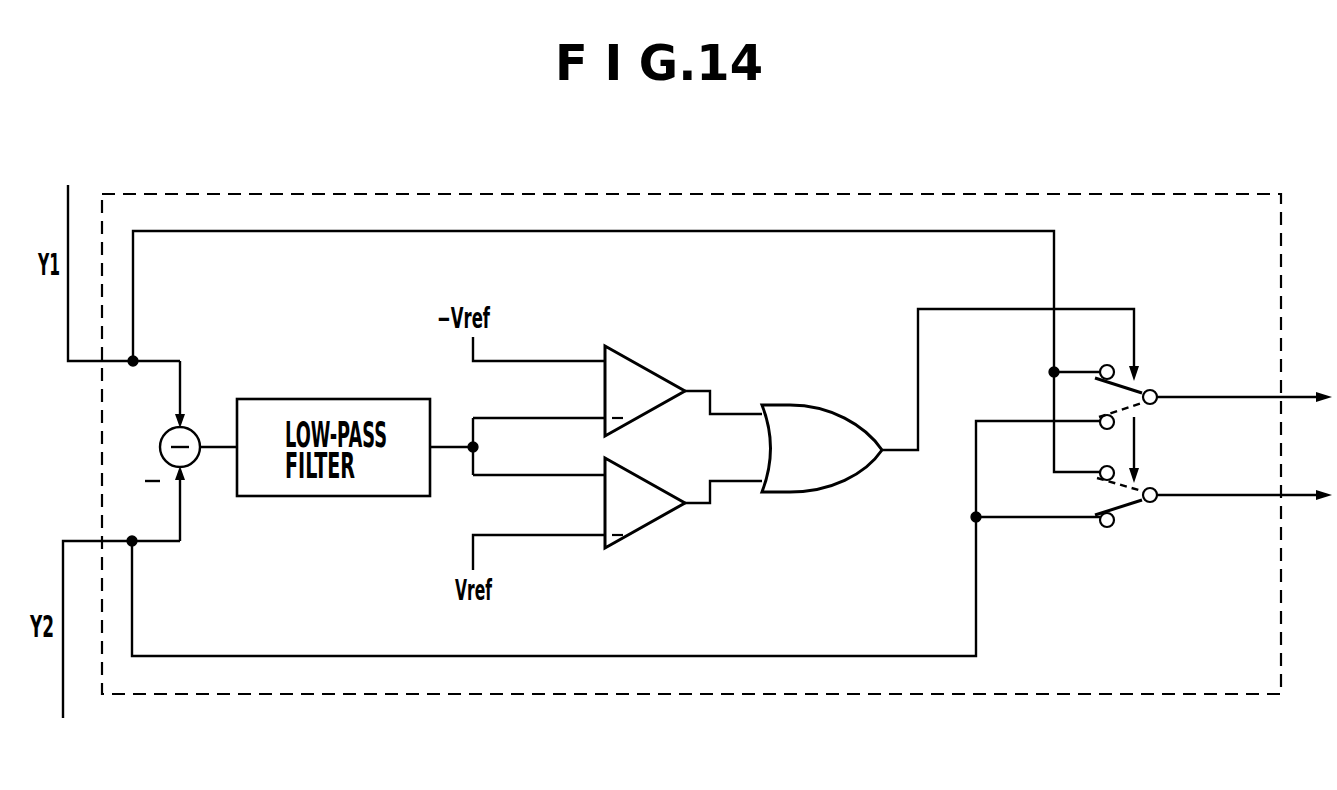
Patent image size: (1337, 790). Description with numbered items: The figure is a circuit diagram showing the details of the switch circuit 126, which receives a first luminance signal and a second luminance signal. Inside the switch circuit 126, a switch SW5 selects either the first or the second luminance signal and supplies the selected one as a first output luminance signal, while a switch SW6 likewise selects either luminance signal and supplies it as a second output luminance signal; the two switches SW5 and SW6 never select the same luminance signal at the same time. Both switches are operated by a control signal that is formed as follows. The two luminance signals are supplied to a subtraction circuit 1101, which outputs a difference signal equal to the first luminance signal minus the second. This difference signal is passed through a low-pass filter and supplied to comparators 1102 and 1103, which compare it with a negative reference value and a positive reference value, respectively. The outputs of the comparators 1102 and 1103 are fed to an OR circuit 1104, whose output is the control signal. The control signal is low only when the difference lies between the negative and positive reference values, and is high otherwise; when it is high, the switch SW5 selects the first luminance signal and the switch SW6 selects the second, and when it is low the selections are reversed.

The switch circuit 126 is at (1180, 194).
The subtraction circuit 1101 is at (198, 427).
The comparator 1102 is at (657, 372).
The comparator 1103 is at (657, 525).
The OR circuit 1104 is at (841, 489).
The switch SW5 is at (1152, 380).
The switch SW6 is at (1137, 508).